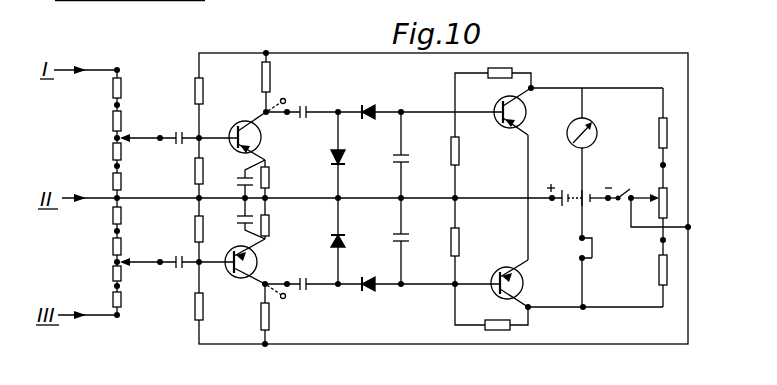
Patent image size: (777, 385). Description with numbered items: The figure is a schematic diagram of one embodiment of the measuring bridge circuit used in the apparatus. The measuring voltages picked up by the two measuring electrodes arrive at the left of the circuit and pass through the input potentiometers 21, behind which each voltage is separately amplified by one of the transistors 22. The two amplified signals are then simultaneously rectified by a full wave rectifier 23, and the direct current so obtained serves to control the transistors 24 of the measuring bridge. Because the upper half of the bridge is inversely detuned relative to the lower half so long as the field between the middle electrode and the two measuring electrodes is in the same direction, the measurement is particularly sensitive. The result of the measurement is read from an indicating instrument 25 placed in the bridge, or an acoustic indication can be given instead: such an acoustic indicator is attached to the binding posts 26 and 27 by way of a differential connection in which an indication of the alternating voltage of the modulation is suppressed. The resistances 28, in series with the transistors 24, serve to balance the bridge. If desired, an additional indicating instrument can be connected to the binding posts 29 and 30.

The input potentiometer 21 is at (113, 150).
The transistor 22 is at (243, 121).
The full wave rectifier 23 is at (356, 198).
The transistor of the measuring bridge 24 is at (526, 108).
The indicating instrument 25 is at (588, 122).
The binding post 26 is at (291, 93).
The binding post 27 is at (285, 298).
The resistance 28 is at (500, 68).
The binding post 29 is at (572, 243).
The binding post 30 is at (572, 278).